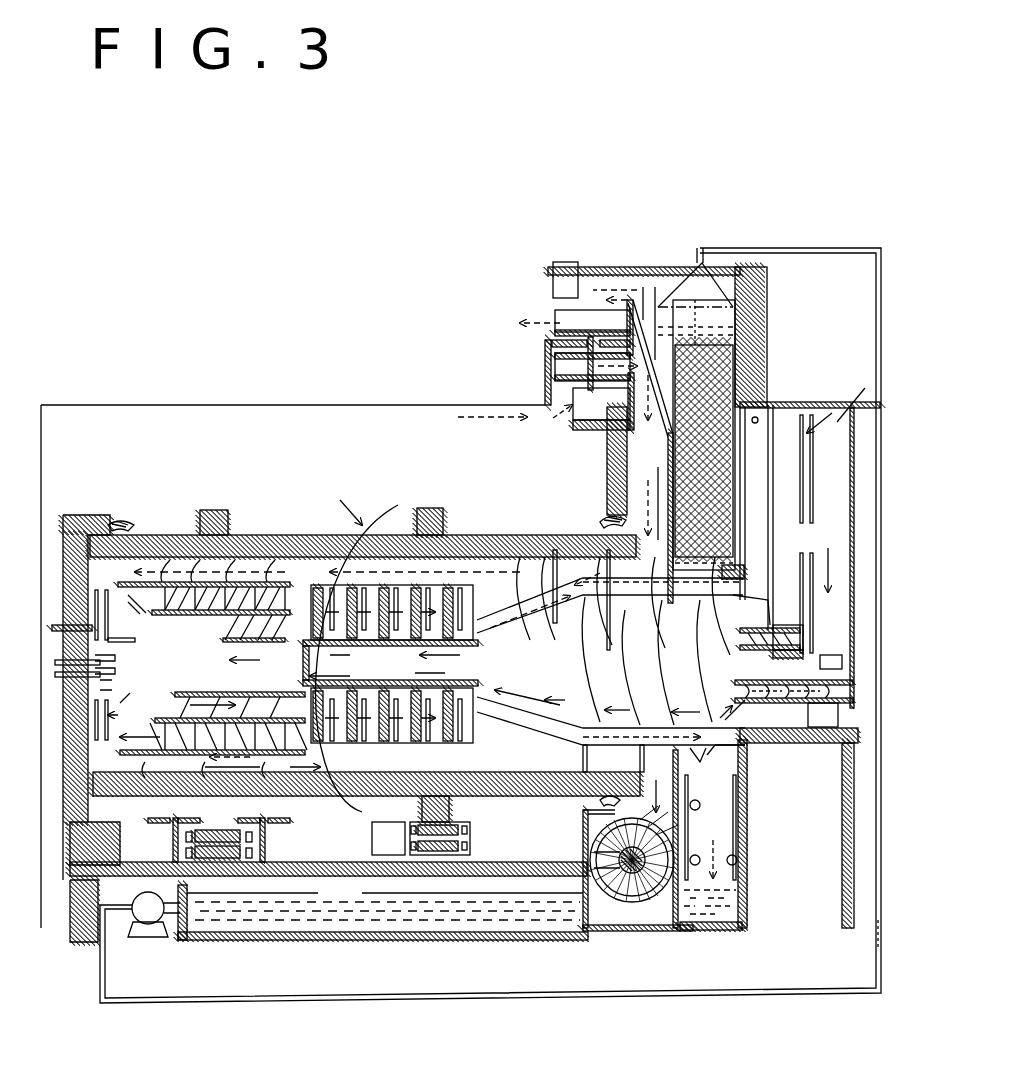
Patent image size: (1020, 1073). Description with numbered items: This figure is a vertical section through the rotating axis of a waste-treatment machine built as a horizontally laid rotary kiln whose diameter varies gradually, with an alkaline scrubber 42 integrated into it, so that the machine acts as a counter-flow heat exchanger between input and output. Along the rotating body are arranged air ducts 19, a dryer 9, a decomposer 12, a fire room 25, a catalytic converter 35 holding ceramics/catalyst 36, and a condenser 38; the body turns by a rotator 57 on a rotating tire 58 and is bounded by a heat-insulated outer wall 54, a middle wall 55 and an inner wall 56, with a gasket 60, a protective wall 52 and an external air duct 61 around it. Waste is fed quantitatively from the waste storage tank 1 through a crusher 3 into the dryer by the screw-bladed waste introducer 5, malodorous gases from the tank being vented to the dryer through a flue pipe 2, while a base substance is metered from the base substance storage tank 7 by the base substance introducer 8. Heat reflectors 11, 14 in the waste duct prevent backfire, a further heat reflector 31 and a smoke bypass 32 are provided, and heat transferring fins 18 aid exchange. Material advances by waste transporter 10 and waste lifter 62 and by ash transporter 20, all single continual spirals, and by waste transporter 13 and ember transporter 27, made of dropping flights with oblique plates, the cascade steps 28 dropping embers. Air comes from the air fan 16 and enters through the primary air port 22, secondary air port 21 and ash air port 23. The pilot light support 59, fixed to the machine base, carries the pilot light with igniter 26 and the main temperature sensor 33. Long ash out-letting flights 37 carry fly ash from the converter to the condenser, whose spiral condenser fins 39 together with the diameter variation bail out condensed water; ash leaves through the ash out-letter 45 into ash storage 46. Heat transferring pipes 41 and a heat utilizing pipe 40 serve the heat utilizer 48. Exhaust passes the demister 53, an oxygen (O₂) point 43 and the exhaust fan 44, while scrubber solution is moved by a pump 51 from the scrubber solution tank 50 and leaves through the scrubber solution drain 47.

The waste storage tank 1 is at (810, 528).
The flue pipe 2 is at (808, 450).
The crusher 3 is at (828, 667).
The waste introducer 5 is at (735, 690).
The base substance storage tank 7 is at (758, 517).
The base substance introducer 8 is at (733, 638).
The dryer 9 is at (677, 600).
The waste transporter 10 is at (612, 612).
The heat reflector 11 is at (490, 663).
The decomposer 12 is at (408, 652).
The waste transporter 13 is at (408, 652).
The heat reflector 14 is at (313, 660).
The air fan 16 is at (566, 368).
The heat transferring fin 18 is at (650, 445).
The air duct 19 is at (465, 595).
The ash transporter 20 is at (502, 572).
The secondary air port 21 is at (302, 595).
The primary air port 22 is at (107, 575).
The ash air port 23 is at (142, 768).
The fire room 25 is at (227, 665).
The pilot light with igniter 26 is at (129, 669).
The ember transporter 27 is at (188, 603).
The cascade steps/embers dropper 28 is at (220, 735).
The heat reflector 31 is at (118, 710).
The smoke bypass 32 is at (290, 710).
The main temperature sensor 33 is at (72, 515).
The catalytic converter 35 is at (392, 612).
The ceramics/catalyst 36 is at (383, 603).
The ash out-letting flight 37 is at (467, 722).
The condenser 38 is at (577, 592).
The condenser fin 39 is at (608, 587).
The heat utilizing pipe 40 is at (710, 835).
The heat transferring pipe 41 is at (730, 805).
The alkaline scrubber 42 is at (721, 446).
The O2 43 is at (568, 265).
The exhaust fan 44 is at (562, 317).
The ash out-letter 45 is at (633, 860).
The ash storage 46 is at (630, 905).
The scrubber solution drain 47 is at (707, 765).
The heat utilizing means 48 is at (706, 830).
The scrubber solution tank 50 is at (383, 911).
The pump 51 is at (490, 613).
The protective wall 52 is at (197, 405).
The demister 53 is at (647, 282).
The outer wall 54 is at (268, 543).
The middle wall 55 is at (327, 582).
The inner wall 56 is at (457, 642).
The rotator 57 is at (393, 677).
The rotating tire 58 is at (210, 518).
The pilot light support 59 is at (73, 738).
The gasket 60 is at (130, 527).
The external air duct 61 is at (75, 460).
The waste lifter 62 is at (530, 695).